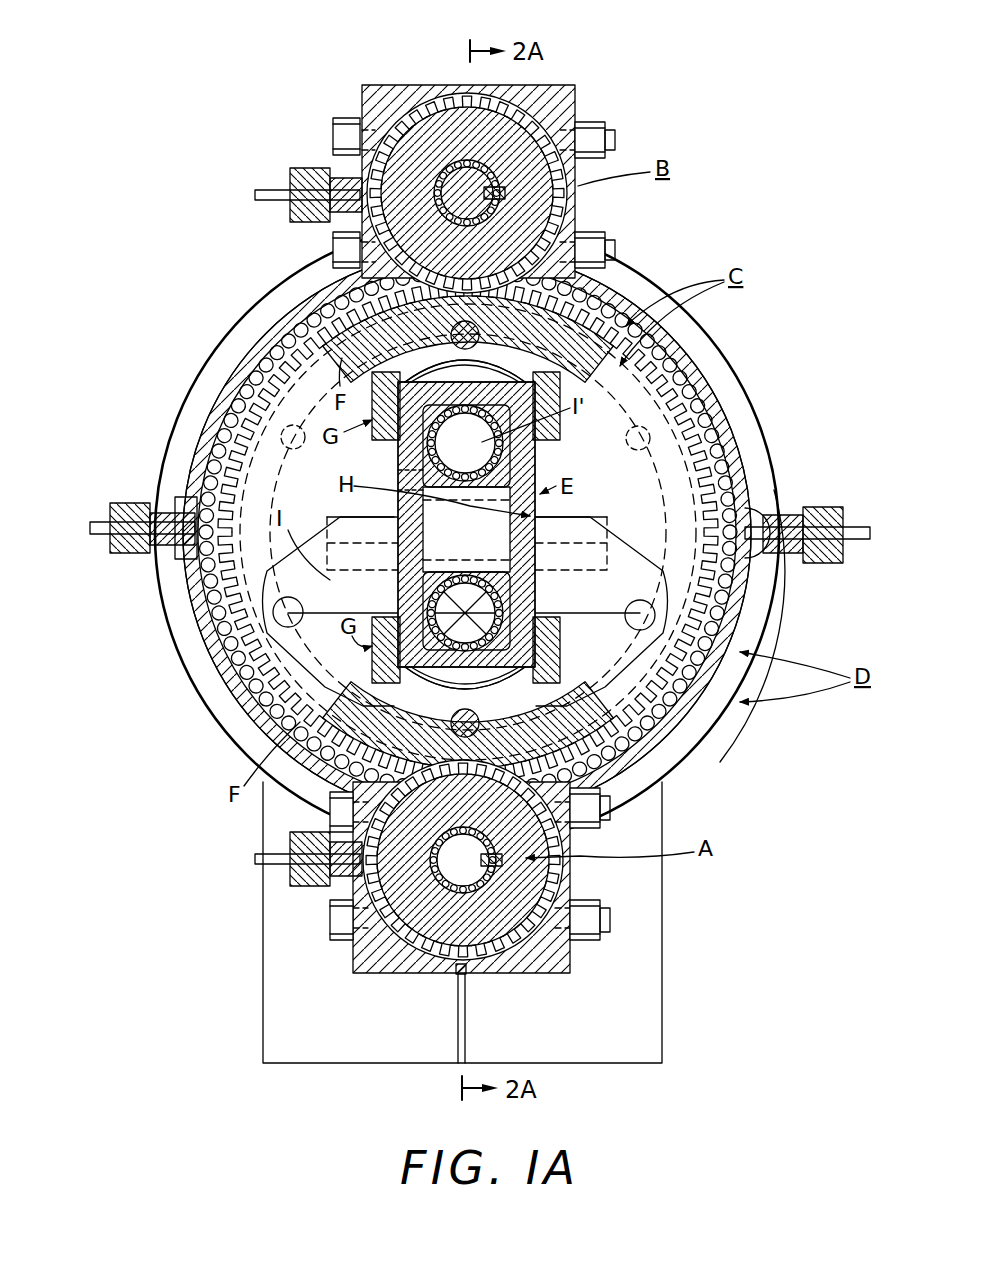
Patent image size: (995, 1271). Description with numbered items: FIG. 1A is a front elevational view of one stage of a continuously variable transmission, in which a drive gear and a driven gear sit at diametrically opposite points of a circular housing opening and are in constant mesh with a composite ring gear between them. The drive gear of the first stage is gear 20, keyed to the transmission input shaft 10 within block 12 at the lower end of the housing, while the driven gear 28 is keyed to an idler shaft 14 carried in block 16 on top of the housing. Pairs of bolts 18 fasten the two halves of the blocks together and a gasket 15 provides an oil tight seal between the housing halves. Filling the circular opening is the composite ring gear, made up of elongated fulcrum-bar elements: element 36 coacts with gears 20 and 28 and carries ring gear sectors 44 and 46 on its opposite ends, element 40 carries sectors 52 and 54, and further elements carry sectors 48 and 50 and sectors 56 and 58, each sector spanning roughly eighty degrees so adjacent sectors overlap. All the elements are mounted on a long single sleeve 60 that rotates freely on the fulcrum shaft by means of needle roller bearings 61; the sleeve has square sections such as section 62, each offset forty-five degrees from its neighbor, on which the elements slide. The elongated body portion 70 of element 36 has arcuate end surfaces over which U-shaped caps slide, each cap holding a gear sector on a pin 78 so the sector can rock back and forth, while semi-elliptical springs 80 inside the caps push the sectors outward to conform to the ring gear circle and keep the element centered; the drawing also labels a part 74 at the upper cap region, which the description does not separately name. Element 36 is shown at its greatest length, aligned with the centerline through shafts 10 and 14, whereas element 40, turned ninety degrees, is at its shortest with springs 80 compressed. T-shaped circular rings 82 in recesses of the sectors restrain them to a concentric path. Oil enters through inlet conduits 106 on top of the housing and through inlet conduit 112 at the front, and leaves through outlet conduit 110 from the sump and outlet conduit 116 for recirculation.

The transmission input shaft 10 is at (463, 860).
The block 12 is at (548, 960).
The idler shaft 14 is at (440, 87).
The gasket 15 is at (466, 973).
The block 16 is at (568, 106).
The bolts 18 is at (338, 126).
The gear 20 is at (410, 960).
The gear 28 is at (546, 86).
The element 36 is at (543, 486).
The element 40 is at (582, 560).
The ring gear sector 44 is at (612, 290).
The ring gear sector 46 is at (680, 768).
The ring gear sector 48 is at (692, 450).
The ring gear sector 50 is at (280, 718).
The ring gear sector 52 is at (748, 632).
The ring gear sector 54 is at (240, 636).
The ring gear sector 56 is at (262, 416).
The ring gear sector 58 is at (712, 690).
The sleeve 60 is at (448, 560).
The needle roller bearings 61 is at (492, 562).
The square section 62 is at (532, 620).
The elongated body portion 70 is at (400, 466).
The guide block 74 is at (374, 378).
The pin 78 is at (494, 380).
The semi-elliptical springs 80 is at (542, 380).
The T-shape cross-sectioned circular rings 82 is at (702, 400).
The oil inlet conduits 106 is at (270, 190).
The oil outlet conduit 110 is at (262, 858).
The oil inlet conduit 112 is at (832, 526).
The oil outlet conduit 116 is at (108, 528).